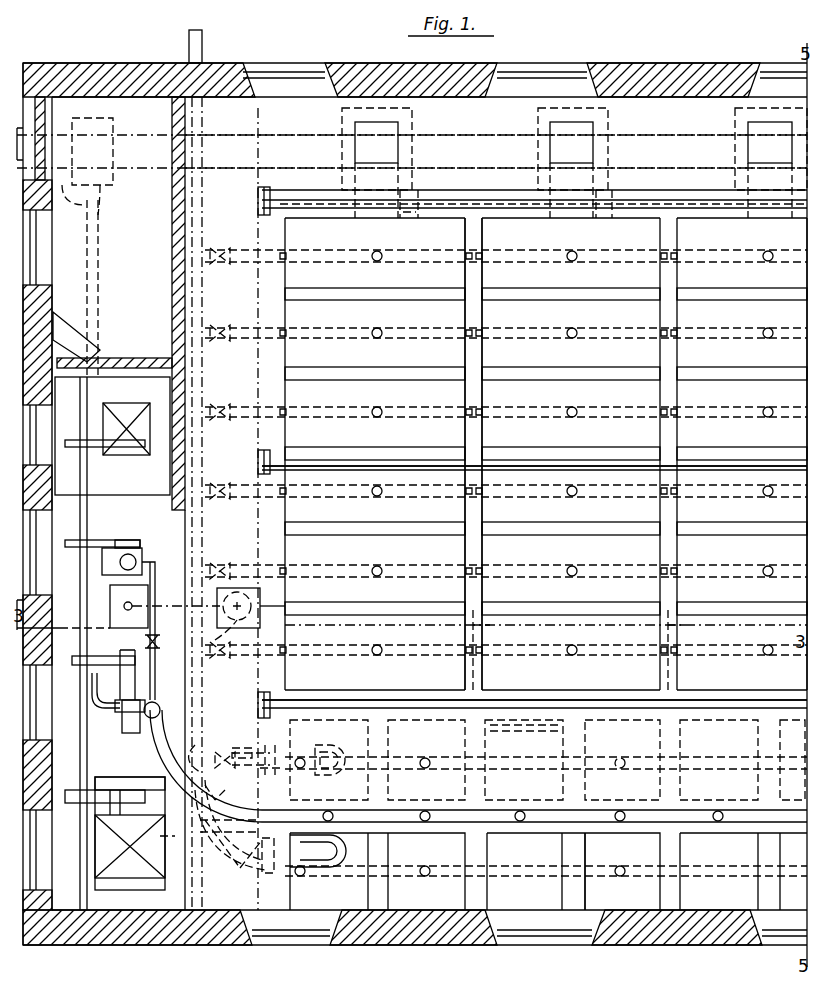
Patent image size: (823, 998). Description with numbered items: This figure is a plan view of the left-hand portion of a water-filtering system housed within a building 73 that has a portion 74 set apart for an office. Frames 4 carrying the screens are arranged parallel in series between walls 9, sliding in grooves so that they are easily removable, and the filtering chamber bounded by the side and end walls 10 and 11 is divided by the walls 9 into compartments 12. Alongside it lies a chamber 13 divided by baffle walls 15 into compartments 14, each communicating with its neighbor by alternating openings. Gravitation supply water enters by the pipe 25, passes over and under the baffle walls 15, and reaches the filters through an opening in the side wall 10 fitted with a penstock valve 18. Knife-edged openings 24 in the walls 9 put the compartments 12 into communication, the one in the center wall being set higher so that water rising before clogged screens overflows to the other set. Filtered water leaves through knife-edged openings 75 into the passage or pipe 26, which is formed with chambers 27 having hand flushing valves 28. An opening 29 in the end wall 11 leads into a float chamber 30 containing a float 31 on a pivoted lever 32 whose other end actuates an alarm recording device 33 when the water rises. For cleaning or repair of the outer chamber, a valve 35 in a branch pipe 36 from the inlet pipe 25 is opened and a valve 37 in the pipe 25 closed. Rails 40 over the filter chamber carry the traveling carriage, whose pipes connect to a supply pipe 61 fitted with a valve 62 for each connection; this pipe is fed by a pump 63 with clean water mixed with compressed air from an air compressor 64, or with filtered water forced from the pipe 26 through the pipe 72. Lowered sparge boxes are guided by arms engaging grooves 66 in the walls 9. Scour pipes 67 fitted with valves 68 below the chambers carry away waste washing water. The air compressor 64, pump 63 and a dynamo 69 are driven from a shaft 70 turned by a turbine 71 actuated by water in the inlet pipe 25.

The frame 4 is at (438, 293).
The wall 9 is at (482, 320).
The side wall 10 is at (772, 217).
The end wall 11 is at (288, 505).
The compartment 12 is at (546, 485).
The chamber 13 is at (377, 760).
The compartment 14 is at (660, 785).
The baffle wall 15 is at (465, 785).
The valve 18 is at (532, 728).
The opening 24 is at (478, 676).
The pipe 25 is at (200, 858).
The passage or pipe 26 is at (280, 148).
The chamber 27 is at (574, 163).
The hand flushing valve 28 is at (415, 218).
The opening 29 is at (290, 608).
The float chamber 30 is at (255, 606).
The float 31 is at (237, 628).
The pivoted lever 32 is at (182, 612).
The alarm recording device 33 is at (148, 600).
The valve 35 is at (282, 790).
The branch pipe 36 is at (232, 780).
The valve 37 is at (245, 873).
The rail 40 is at (712, 207).
The supply pipe 61 is at (162, 740).
The valve 62 is at (517, 812).
The pump 63 is at (125, 720).
The air compressor 64 is at (143, 560).
The groove 66 is at (288, 262).
The scour pipe 67 is at (380, 261).
The valve 68 is at (222, 267).
The dynamo 69 is at (125, 420).
The shaft 70 is at (88, 482).
The turbine 71 is at (115, 833).
The pipe 72 is at (96, 320).
The building 73 is at (268, 100).
The portion 74 is at (101, 188).
The opening 75 is at (558, 201).